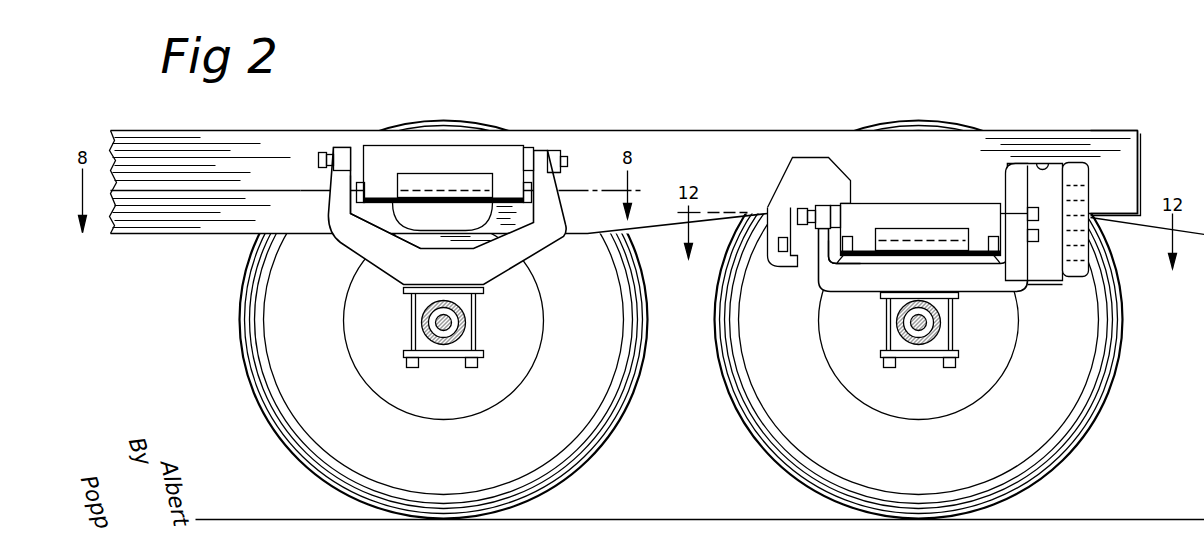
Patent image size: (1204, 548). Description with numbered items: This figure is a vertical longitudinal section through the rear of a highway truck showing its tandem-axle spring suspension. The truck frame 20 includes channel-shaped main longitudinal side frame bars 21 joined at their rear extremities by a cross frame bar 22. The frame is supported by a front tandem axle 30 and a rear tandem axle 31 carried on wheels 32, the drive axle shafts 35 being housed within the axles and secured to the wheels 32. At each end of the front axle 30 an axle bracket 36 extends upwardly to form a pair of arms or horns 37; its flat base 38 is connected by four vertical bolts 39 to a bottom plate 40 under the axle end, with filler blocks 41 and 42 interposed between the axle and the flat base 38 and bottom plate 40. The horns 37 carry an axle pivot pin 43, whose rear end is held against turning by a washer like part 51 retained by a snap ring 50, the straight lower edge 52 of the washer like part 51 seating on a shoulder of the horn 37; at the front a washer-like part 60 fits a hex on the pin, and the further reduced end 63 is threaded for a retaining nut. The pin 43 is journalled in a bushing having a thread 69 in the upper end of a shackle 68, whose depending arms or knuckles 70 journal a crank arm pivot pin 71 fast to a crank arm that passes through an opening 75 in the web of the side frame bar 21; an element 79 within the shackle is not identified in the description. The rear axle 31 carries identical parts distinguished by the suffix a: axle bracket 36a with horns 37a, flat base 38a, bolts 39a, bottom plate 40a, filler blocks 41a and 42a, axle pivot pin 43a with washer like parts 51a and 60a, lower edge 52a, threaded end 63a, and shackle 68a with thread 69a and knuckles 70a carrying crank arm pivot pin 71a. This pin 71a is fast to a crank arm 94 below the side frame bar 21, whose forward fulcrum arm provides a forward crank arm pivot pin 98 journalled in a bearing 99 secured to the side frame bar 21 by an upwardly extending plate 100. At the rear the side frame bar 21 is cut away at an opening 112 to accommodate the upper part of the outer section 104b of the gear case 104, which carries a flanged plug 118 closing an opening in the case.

The frame 20 is at (225, 126).
The main longitudinal side frame bar 21 is at (695, 130).
The cross frame bar 22 is at (1141, 143).
The front tandem axle 30 is at (467, 330).
The rear tandem axle 31 is at (920, 345).
The wheels 32 is at (650, 346).
The drive axle shaft 35 is at (436, 323).
The axle bracket 36 is at (360, 264).
The arms or horns 37 is at (350, 249).
The flat base 38 is at (452, 288).
The vertical bolts 39 is at (415, 368).
The bottom plate 40 is at (440, 362).
The filler block 41 is at (473, 302).
The filler block 42 is at (470, 345).
The axle pivot pin 43 is at (529, 147).
The snap ring 50 is at (568, 165).
The washer like part 51 is at (557, 152).
The lower edge 52 is at (562, 178).
The washer-like part 60 is at (341, 147).
The further reduced end 63 is at (318, 161).
The shackle 68 is at (437, 143).
The thread 69 is at (326, 154).
The arms or knuckles 70 is at (376, 182).
The crank arm pivot pin 71 is at (350, 198).
The opening 75 is at (410, 231).
The block 79 is at (453, 183).
The axle bracket 36a is at (819, 294).
The arms or horns 37a is at (814, 267).
The flat base 38a is at (850, 299).
The vertical bolts 39a is at (888, 368).
The bottom plate 40a is at (925, 360).
The filler block 41a is at (945, 302).
The filler block 42a is at (945, 345).
The axle pivot pin 43a is at (836, 205).
The washer like part 51a is at (1033, 207).
The lower edge 52a is at (1038, 236).
The washer-like part 60a is at (822, 205).
The further reduced end 63a is at (787, 210).
The shackle 68a is at (876, 202).
The thread 69a is at (808, 208).
The arms or knuckles 70a is at (852, 246).
The crank arm pivot pin 71a is at (838, 254).
The crank arm 94 is at (932, 236).
The forward crank arm pivot pin 98 is at (778, 246).
The bearing 99 is at (792, 264).
The upwardly extending plate 100 is at (811, 171).
The gear case 104 is at (1058, 172).
The outer section 104b is at (1048, 285).
The opening 112 is at (1042, 162).
The flanged plug 118 is at (1090, 246).